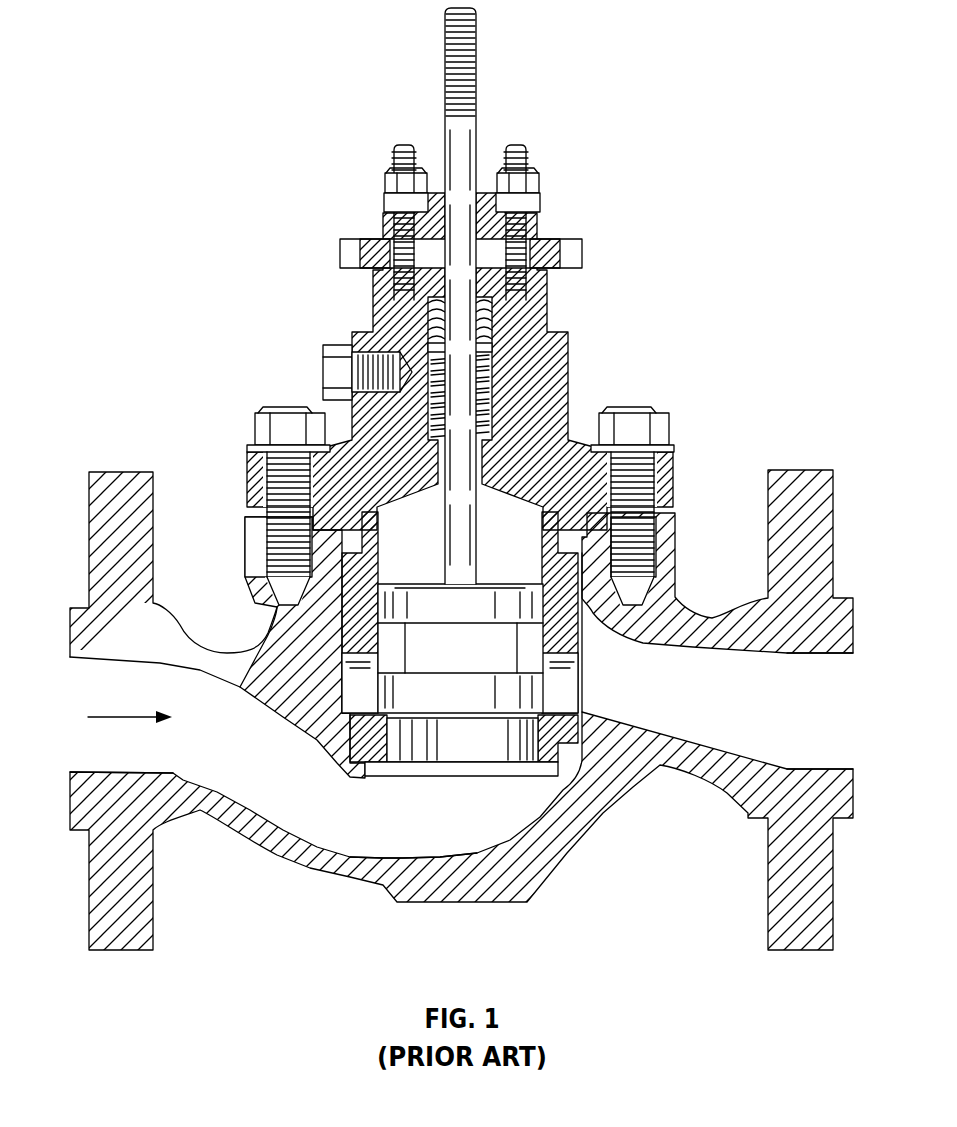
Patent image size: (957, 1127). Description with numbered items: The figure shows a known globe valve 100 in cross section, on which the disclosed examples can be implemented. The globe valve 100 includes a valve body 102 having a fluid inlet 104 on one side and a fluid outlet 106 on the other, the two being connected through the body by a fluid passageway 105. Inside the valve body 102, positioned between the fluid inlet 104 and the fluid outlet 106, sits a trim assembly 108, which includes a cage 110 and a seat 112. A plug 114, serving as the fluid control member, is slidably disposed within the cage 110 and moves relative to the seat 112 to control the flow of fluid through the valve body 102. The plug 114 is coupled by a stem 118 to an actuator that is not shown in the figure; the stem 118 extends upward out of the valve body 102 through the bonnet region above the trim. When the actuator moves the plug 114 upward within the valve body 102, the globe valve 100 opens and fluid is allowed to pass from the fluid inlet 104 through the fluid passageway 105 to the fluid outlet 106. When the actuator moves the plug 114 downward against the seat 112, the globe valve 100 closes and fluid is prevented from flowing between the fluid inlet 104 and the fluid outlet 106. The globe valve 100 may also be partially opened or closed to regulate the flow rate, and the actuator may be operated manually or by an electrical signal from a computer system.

The globe valve 100 is at (652, 50).
The valve body 102 is at (853, 633).
The fluid inlet 104 is at (70, 692).
The fluid passageway 105 is at (411, 821).
The fluid outlet 106 is at (855, 712).
The trim assembly 108 is at (424, 552).
The cage 110 is at (583, 667).
The seat 112 is at (428, 717).
The plug 114 is at (472, 705).
The stem 118 is at (458, 452).